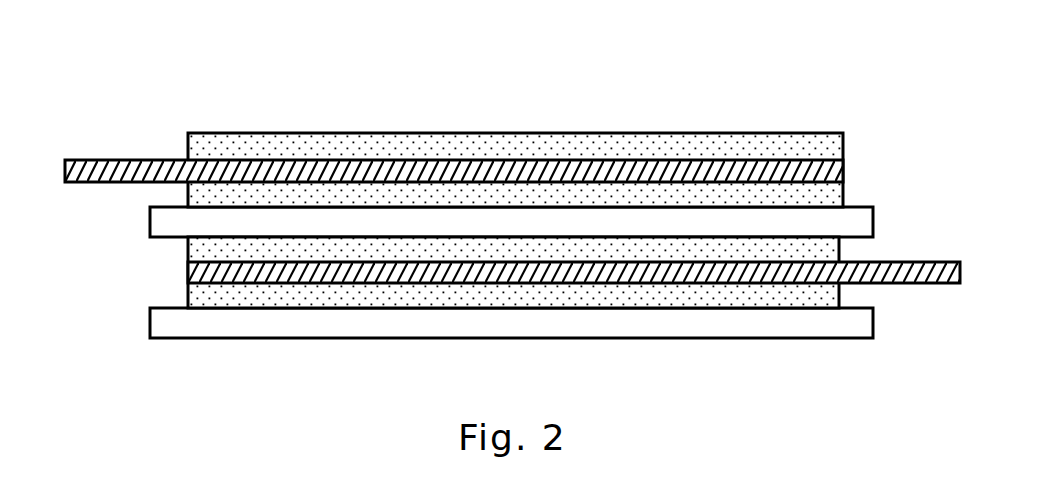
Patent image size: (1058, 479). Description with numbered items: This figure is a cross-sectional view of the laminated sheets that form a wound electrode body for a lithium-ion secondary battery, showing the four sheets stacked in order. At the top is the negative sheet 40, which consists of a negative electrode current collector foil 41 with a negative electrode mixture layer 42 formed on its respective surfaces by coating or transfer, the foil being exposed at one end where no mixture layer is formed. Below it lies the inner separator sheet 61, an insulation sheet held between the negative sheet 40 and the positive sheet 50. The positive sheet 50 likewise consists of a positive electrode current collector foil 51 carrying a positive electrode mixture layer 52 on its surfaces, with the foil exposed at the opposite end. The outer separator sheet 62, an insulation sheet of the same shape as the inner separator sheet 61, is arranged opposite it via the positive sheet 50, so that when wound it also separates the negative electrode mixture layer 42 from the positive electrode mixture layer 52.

The negative sheet 40 is at (481, 135).
The negative electrode current collector foil 41 is at (127, 165).
The negative electrode mixture layer 42 is at (229, 141).
The positive sheet 50 is at (548, 311).
The positive electrode current collector foil 51 is at (921, 286).
The positive electrode mixture layer 52 is at (810, 300).
The inner separator sheet 61 is at (150, 222).
The outer separator sheet 62 is at (150, 323).